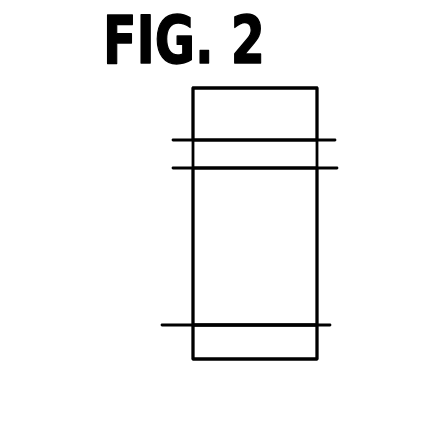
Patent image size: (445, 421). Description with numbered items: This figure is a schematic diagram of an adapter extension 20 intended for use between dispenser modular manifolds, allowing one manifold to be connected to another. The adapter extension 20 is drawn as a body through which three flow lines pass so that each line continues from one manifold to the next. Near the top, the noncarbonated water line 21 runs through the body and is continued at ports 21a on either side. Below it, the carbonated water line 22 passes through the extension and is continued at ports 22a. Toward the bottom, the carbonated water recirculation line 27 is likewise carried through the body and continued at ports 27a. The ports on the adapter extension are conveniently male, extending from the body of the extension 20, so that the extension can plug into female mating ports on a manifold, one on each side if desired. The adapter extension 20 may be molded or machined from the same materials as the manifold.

The adapter extension 20 is at (317, 266).
The noncarbonated water line 21 is at (242, 140).
The ports 21a is at (173, 140).
The carbonated water line 22 is at (262, 168).
The ports 22a is at (173, 168).
The carbonated water recirculation line 27 is at (243, 325).
The ports 27a is at (162, 325).